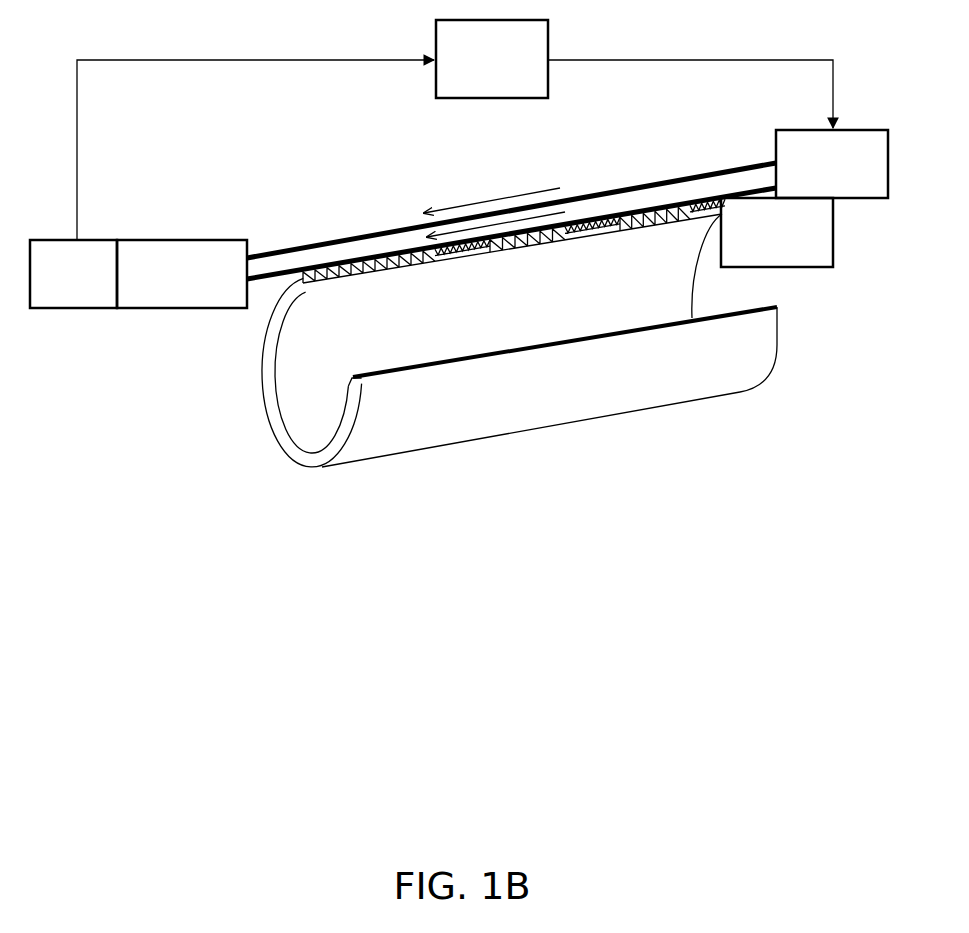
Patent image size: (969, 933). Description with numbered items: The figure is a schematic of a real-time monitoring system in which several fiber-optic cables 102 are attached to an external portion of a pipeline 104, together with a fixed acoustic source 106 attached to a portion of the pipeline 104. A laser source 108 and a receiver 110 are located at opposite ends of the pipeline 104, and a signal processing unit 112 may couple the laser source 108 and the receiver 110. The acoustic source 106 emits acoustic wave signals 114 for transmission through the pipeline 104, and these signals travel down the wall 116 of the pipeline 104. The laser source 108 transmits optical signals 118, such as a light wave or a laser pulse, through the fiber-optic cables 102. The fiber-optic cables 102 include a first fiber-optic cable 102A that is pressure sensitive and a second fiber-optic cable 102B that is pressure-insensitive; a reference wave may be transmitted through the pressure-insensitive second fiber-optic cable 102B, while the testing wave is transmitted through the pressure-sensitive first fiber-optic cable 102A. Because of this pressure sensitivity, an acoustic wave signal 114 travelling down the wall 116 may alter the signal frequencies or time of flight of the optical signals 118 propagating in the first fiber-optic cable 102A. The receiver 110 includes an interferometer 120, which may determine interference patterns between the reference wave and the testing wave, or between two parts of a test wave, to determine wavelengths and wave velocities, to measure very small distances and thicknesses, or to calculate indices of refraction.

The fiber-optic cables 102 is at (506, 202).
The first fiber-optic cable 102A is at (352, 238).
The second fiber-optic cable 102B is at (328, 266).
The pipeline 104 is at (703, 385).
The acoustic source 106 is at (755, 247).
The laser source 108 is at (811, 181).
The receiver 110 is at (53, 290).
The signal processing unit 112 is at (471, 74).
The acoustic wave signals 114 is at (412, 268).
The wall 116 is at (387, 272).
The optical signals 118 is at (477, 228).
The interferometer 120 is at (157, 290).